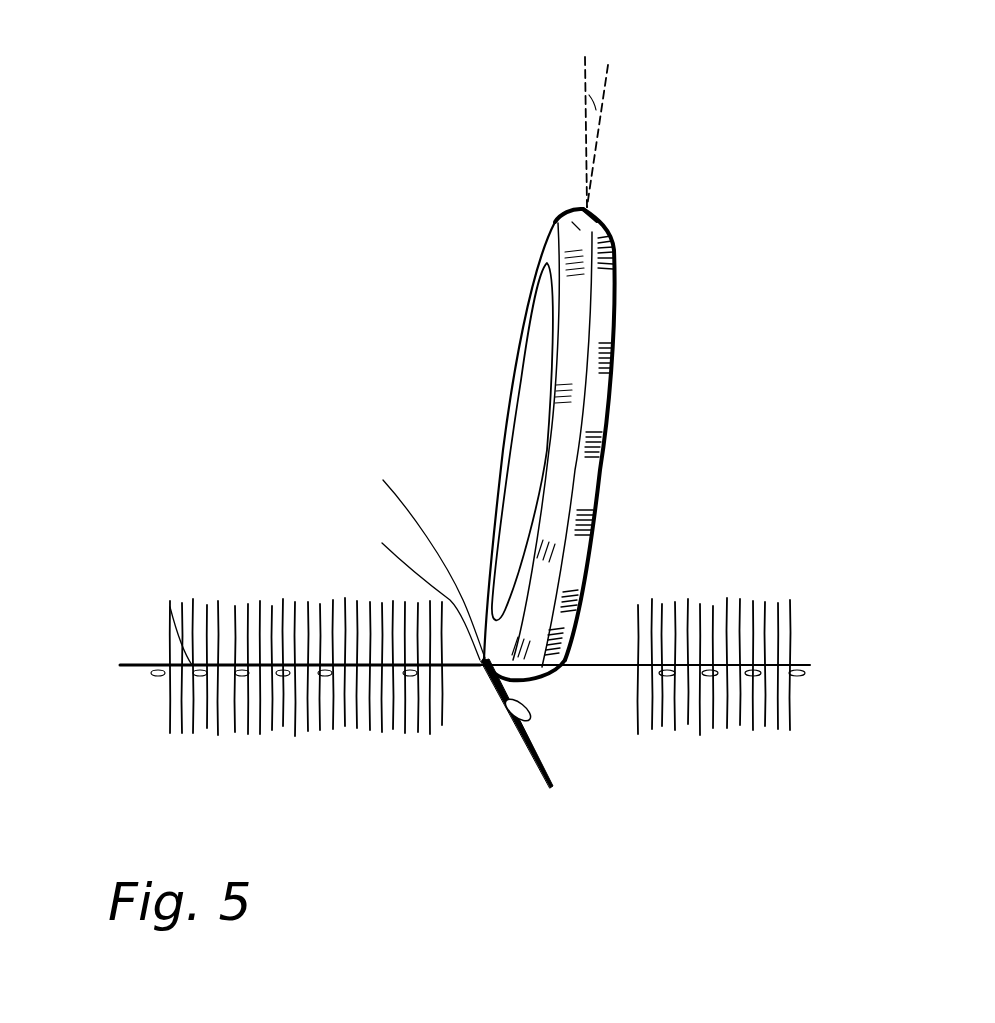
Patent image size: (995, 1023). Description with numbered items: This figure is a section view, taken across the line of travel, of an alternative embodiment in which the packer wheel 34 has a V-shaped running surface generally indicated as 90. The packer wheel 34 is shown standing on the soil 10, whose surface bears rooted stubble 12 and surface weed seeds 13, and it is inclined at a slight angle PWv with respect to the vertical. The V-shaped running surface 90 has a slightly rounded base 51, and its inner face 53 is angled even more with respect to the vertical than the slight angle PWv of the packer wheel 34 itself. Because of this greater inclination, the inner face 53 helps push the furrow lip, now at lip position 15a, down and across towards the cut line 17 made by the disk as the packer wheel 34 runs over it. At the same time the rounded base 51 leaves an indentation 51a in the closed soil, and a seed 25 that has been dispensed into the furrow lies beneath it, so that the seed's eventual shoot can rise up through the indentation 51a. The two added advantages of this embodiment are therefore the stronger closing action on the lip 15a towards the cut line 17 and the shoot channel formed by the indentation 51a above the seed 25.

The soil 10 is at (92, 739).
The rooted stubble 12 is at (297, 600).
The surface weed seeds 13 is at (170, 607).
The lip position 15a is at (426, 547).
The cut line 17 is at (413, 587).
The seed 25 is at (518, 727).
The packer wheel 34 is at (522, 290).
The rounded base 51 is at (565, 212).
The indentation 51a is at (546, 680).
The inner face 53 is at (557, 218).
The V-shaped running surface 90 is at (608, 208).
The packer wheel angle to vertical PWv is at (598, 100).